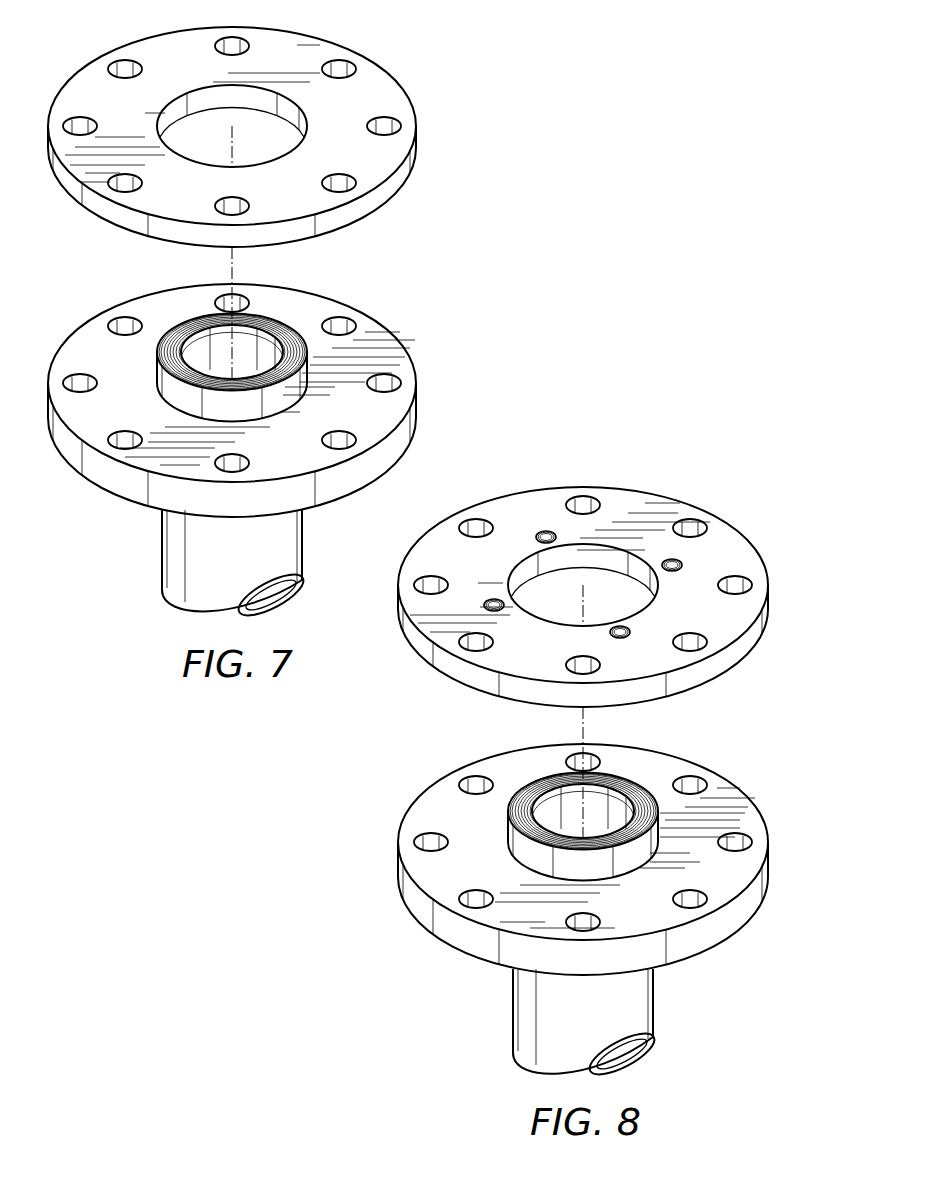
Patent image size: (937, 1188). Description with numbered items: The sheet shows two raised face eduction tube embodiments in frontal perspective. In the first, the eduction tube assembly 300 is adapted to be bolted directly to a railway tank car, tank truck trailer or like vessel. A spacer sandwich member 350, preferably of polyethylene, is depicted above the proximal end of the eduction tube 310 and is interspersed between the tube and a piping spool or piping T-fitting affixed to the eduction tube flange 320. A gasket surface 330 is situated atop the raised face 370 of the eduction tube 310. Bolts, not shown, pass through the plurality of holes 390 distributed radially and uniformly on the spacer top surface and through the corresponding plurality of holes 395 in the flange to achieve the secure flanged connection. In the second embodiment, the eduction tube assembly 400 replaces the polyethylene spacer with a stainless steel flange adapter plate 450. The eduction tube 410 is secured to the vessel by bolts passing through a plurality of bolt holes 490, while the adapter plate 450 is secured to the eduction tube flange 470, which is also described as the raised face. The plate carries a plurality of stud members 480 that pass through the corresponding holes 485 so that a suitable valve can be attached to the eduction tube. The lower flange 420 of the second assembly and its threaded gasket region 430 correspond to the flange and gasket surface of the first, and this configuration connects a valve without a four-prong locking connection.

In FIG. 7, the eduction tube assembly embodiment 300 is at (250, 325).
In FIG. 7, the eduction tube 310 is at (168, 558).
In FIG. 7, the eduction tube flange 320 is at (385, 340).
In FIG. 7, the gasket surface 330 is at (205, 316).
In FIG. 7, the spacer sandwich member 350 is at (388, 84).
In FIG. 7, the raised face 370 is at (165, 385).
In FIG. 7, the holes 390 is at (117, 62).
In FIG. 7, the holes 395 is at (392, 384).
In FIG. 8, the eduction tube assembly embodiment 400 is at (583, 777).
In FIG. 8, the eduction tube 410 is at (520, 1016).
In FIG. 8, the lower flange 420 is at (680, 768).
In FIG. 8, the threaded portion 430 is at (560, 775).
In FIG. 8, the stainless steel flange adapter plate 450 is at (667, 505).
In FIG. 8, the eduction tube flange 470 is at (517, 848).
In FIG. 8, the stud members 480 is at (465, 522).
In FIG. 8, the holes 485 is at (742, 842).
In FIG. 8, the bolt holes 490 is at (543, 540).